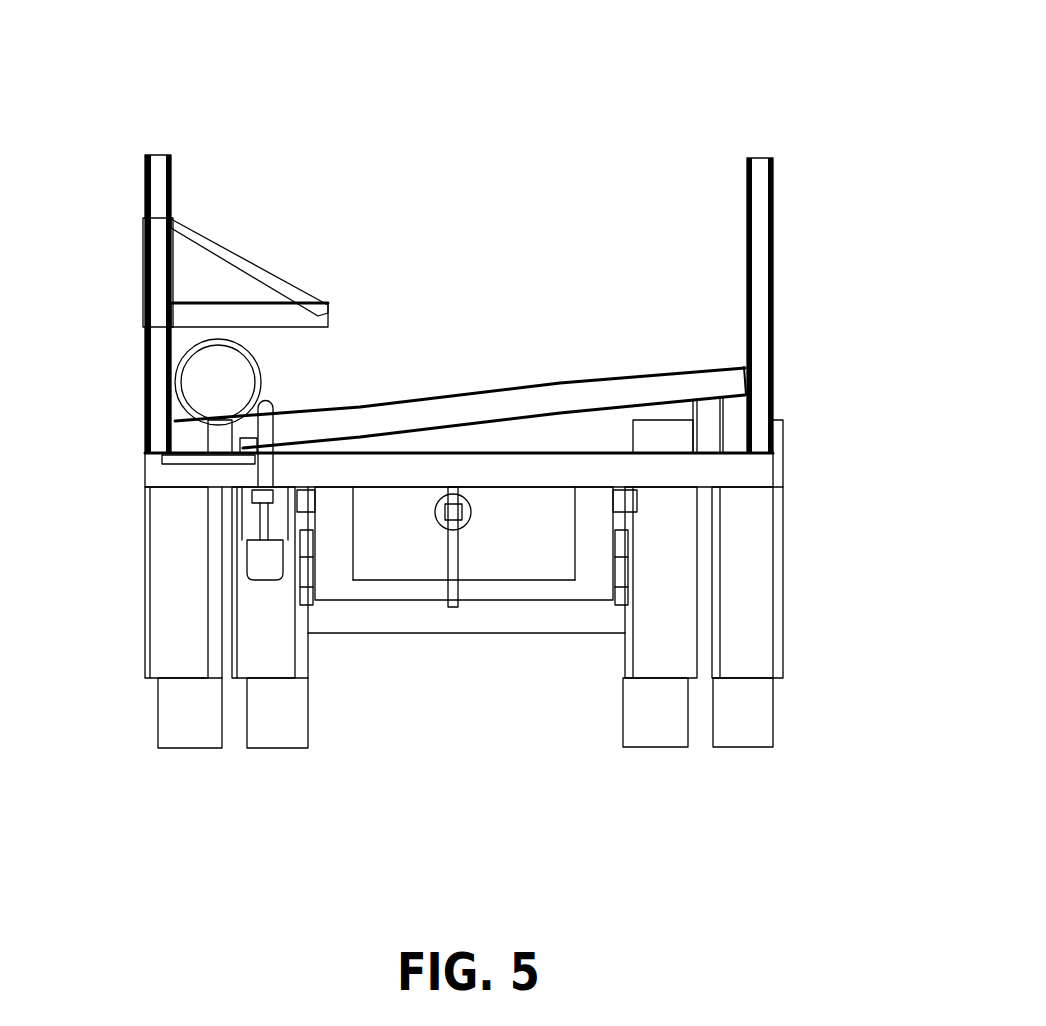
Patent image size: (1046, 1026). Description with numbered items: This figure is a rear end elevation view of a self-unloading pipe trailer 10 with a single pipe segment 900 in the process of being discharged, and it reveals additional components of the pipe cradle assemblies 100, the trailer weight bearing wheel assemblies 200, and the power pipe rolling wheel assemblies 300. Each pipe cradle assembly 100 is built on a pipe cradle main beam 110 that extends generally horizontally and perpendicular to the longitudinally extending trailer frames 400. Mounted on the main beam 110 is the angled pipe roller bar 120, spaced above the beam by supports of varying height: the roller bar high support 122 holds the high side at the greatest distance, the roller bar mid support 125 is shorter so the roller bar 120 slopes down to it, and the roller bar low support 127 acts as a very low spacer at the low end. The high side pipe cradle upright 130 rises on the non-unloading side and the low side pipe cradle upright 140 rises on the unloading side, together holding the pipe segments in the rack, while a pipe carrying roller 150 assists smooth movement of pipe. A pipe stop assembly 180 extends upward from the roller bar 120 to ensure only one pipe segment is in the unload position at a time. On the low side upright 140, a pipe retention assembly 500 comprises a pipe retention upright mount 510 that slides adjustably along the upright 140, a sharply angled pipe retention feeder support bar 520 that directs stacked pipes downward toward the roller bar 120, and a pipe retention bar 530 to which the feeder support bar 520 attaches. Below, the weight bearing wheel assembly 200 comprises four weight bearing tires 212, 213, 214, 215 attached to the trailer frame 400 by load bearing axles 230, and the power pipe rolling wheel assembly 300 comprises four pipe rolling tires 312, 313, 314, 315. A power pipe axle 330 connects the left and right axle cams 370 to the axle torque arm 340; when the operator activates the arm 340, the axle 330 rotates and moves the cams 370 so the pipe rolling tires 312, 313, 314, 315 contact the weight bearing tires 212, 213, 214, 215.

The self-unloading pipe trailer 10 is at (680, 906).
The pipe cradle assembly 100 is at (824, 114).
The pipe cradle main beam 110 is at (565, 463).
The pipe roller bar 120 is at (418, 405).
The roller bar high support 122 is at (706, 412).
The roller bar mid support 125 is at (505, 432).
The roller bar low support 127 is at (290, 452).
The high side pipe cradle upright 130 is at (747, 270).
The low side pipe cradle upright 140 is at (172, 192).
The pipe carrying roller 150 is at (212, 463).
The pipe stop assembly 180 is at (270, 594).
The trailer weight bearing wheel assembly 200 is at (817, 686).
The weight bearing tire 212 is at (725, 745).
The weight bearing tire 213 is at (640, 745).
The weight bearing tire 214 is at (278, 742).
The weight bearing tire 215 is at (190, 740).
The load bearing axle 230 is at (433, 632).
The power pipe rolling wheel assembly 300 is at (812, 571).
The pipe rolling tire 312 is at (771, 574).
The pipe rolling tire 313 is at (688, 578).
The pipe rolling tire 314 is at (285, 658).
The pipe rolling tire 315 is at (198, 658).
The power pipe axle 330 is at (508, 588).
The axle torque arm 340 is at (457, 543).
The axle cam 370 is at (315, 568).
The trailer frame 400 is at (357, 522).
The pipe retention assembly 500 is at (318, 217).
The pipe retention upright mount 510 is at (116, 290).
The pipe retention feeder support bar 520 is at (212, 243).
The pipe retention bar 530 is at (325, 313).
The pipe segment 900 is at (263, 363).